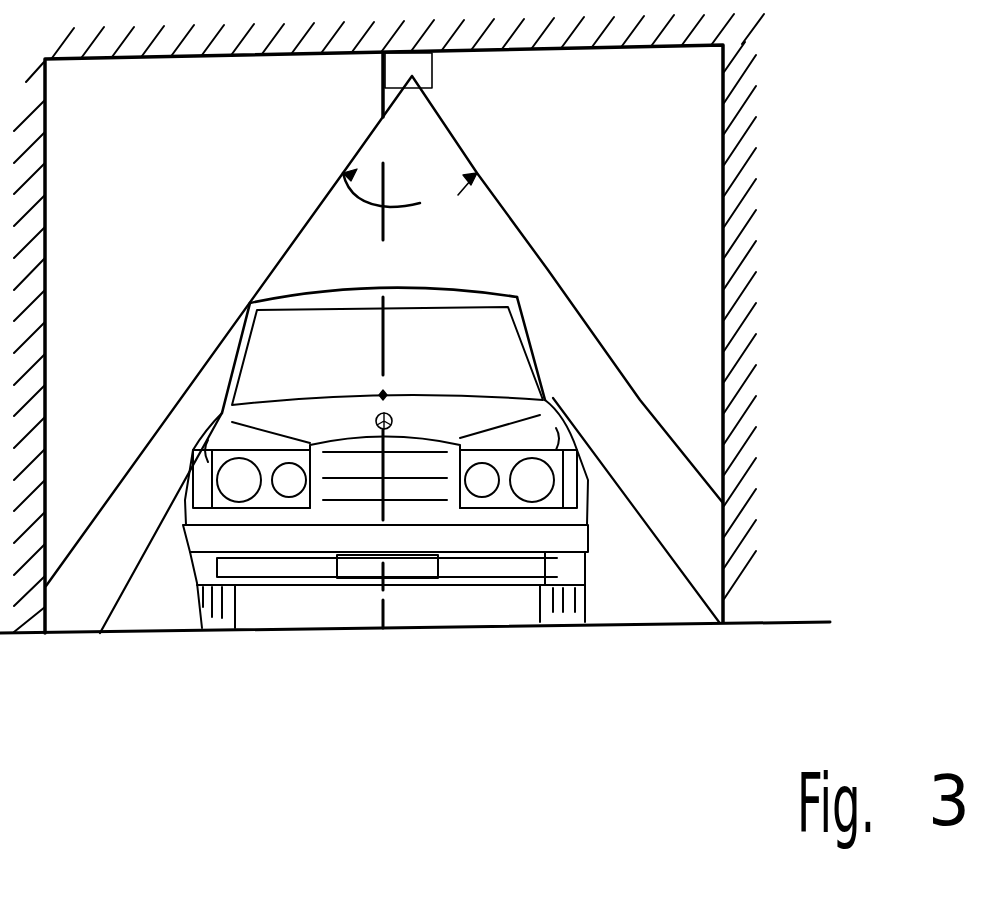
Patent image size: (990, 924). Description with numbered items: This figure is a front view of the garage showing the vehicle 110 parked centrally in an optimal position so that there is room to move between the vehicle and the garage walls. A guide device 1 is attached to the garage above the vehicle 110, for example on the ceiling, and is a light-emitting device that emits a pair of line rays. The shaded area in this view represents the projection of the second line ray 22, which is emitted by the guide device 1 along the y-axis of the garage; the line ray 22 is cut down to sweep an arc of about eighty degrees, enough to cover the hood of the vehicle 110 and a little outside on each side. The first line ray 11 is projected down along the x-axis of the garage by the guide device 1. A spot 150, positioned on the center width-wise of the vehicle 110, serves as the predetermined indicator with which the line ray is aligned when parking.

The guide device 1 is at (412, 74).
The second line ray 22 is at (555, 313).
The first line ray 11 is at (390, 607).
The spot 150 is at (362, 403).
The vehicle 110 is at (587, 527).